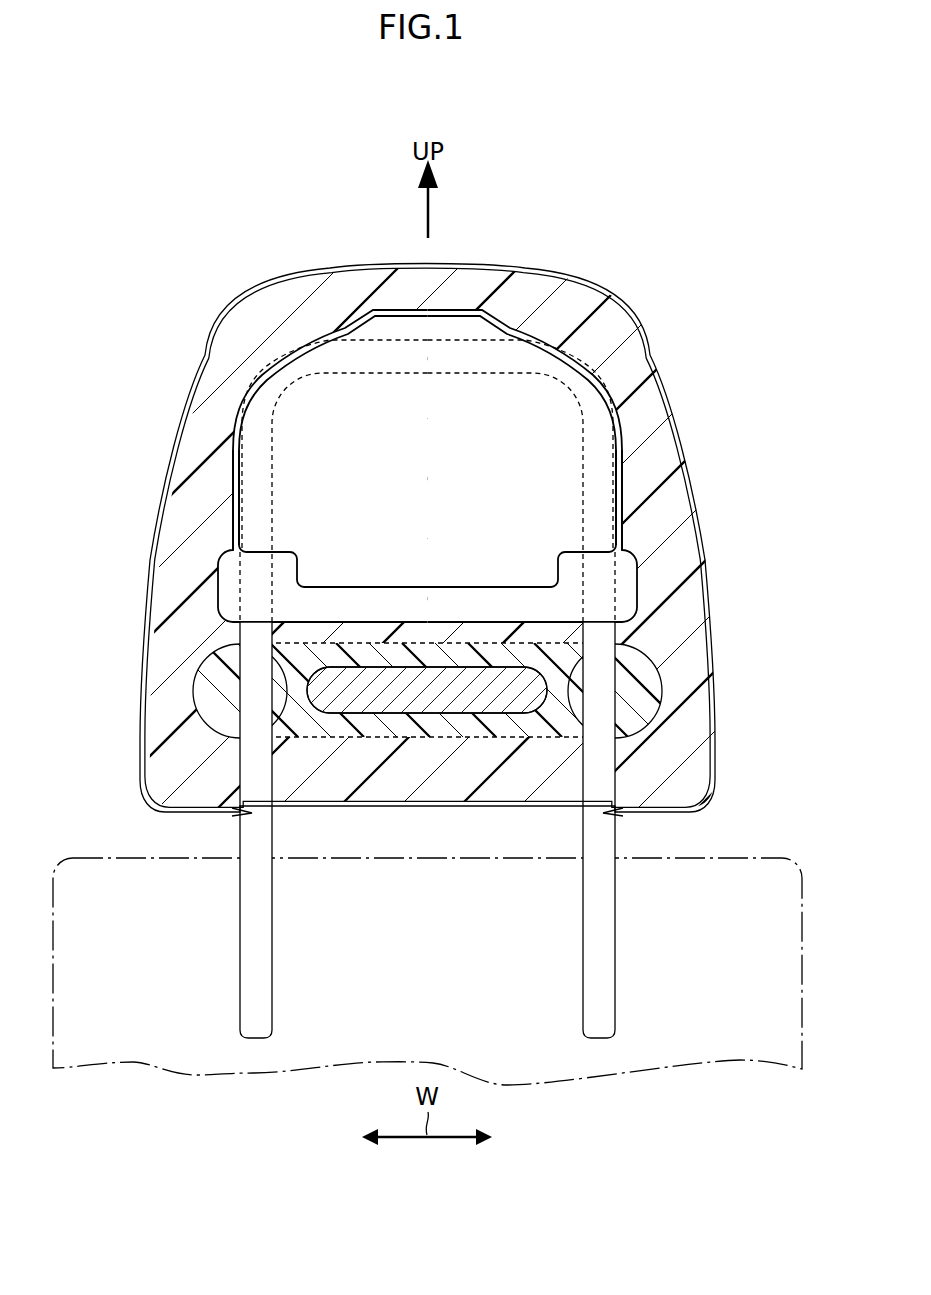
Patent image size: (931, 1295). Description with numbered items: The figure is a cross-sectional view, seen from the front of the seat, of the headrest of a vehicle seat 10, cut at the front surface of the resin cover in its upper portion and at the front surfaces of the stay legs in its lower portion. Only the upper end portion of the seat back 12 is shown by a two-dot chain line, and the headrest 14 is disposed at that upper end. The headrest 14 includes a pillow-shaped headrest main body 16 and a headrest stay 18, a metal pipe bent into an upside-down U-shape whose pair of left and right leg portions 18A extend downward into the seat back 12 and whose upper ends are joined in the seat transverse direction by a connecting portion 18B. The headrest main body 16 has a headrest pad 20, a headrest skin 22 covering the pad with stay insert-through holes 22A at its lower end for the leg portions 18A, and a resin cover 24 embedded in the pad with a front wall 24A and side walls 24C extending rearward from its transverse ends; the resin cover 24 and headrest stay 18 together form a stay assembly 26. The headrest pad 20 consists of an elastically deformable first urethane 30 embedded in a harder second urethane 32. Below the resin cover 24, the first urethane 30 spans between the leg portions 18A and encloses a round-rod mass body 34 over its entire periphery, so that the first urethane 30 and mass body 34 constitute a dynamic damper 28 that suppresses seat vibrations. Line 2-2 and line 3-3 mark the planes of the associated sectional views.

The vehicle seat 10 is at (720, 258).
The seat back 12 is at (745, 845).
The headrest 14 is at (666, 292).
The headrest main body 16 is at (150, 414).
The headrest stay 18 is at (359, 701).
The leg portions 18A is at (276, 836).
The connecting portion 18B is at (426, 365).
The headrest pad 20 is at (172, 530).
The headrest skin 22 is at (188, 378).
The stay insert-through holes 22A is at (245, 812).
The resin cover 24 is at (283, 393).
The front wall 24A is at (600, 398).
The side walls 24C is at (236, 454).
The stay assembly 26 is at (650, 527).
The dynamic damper 28 is at (446, 748).
The first urethane 30 is at (400, 630).
The second urethane 32 is at (170, 576).
The mass body 34 is at (458, 664).
The line 2- 2 is at (408, 280).
The line 3- 3 is at (193, 718).